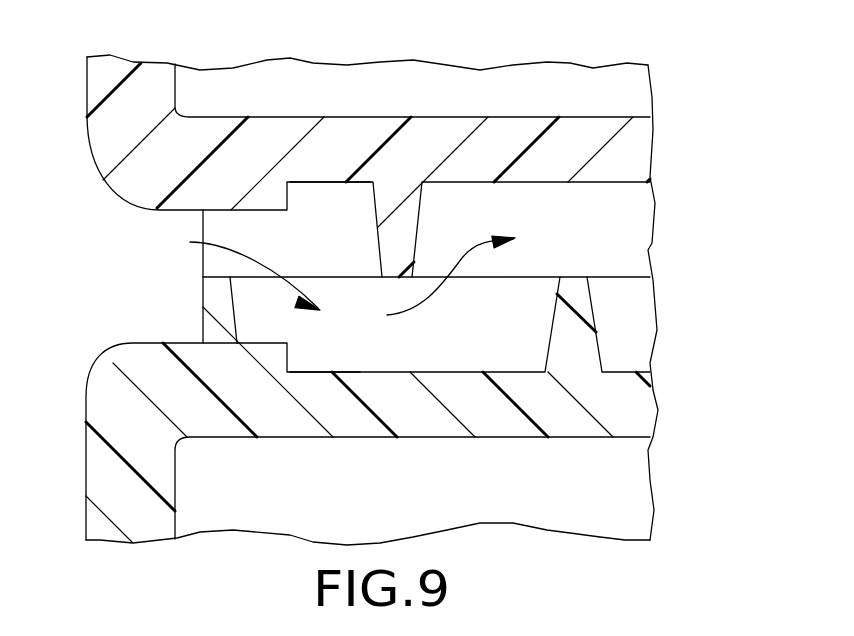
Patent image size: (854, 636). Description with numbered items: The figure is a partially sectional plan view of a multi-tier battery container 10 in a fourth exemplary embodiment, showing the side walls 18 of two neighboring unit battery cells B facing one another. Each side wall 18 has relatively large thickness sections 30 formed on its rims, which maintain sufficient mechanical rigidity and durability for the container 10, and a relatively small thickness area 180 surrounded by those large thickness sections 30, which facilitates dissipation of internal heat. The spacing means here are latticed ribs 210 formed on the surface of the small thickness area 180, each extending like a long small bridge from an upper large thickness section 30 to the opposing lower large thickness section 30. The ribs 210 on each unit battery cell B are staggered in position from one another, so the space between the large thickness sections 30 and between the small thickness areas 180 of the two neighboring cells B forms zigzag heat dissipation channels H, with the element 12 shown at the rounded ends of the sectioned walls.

The container 10 is at (405, 103).
The seal ring 12 is at (98, 95).
The side wall 18 is at (633, 413).
The large thickness section 30 is at (145, 178).
The small thickness area 180 is at (327, 372).
The latticed rib 210 is at (615, 238).
The unit battery cell B is at (90, 160).
The heat dissipation channel H is at (540, 193).